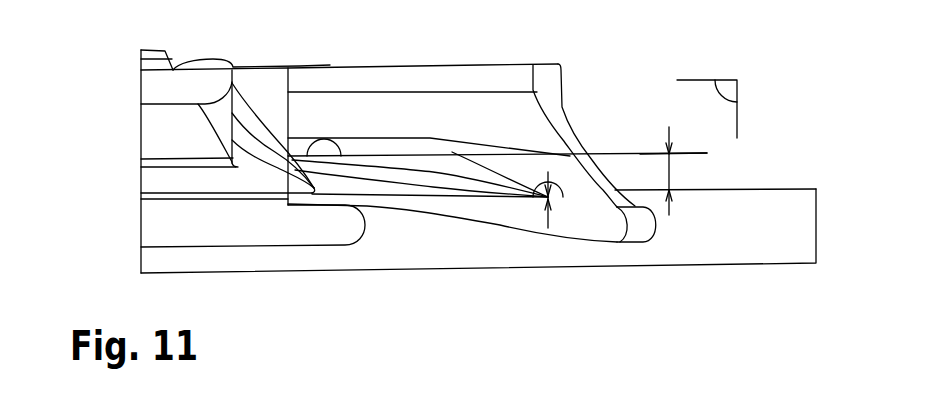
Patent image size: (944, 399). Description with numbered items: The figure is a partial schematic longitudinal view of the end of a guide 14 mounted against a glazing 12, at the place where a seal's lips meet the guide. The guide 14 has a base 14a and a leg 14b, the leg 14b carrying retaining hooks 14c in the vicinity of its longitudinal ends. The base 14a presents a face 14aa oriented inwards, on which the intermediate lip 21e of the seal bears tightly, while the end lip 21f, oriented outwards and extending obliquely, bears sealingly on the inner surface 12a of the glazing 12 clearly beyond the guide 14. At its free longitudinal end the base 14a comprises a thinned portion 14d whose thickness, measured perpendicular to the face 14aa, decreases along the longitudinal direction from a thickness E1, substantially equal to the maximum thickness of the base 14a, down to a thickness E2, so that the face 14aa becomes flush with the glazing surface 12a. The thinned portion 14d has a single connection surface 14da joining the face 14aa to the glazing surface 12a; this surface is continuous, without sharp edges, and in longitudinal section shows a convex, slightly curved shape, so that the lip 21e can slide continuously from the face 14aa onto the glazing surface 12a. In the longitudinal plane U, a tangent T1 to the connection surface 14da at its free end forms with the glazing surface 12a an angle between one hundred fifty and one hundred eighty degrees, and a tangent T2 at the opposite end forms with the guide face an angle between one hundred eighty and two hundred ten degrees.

The guide 14 is at (387, 204).
The base 14a is at (165, 182).
The leg 14b is at (172, 130).
The retaining hook 14c is at (173, 84).
The face oriented inwards 14aa is at (277, 138).
The thinned portion 14d is at (435, 189).
The connection surface 14da is at (428, 166).
The glazing 12 is at (817, 223).
The inner surface of the glazing 12a is at (757, 189).
The intermediate lip 21e is at (633, 243).
The end lip 21f is at (315, 232).
The thickness E1 is at (668, 165).
The thickness E2 is at (525, 220).
The tangent T1 is at (485, 168).
The tangent T2 is at (387, 152).
The longitudinal plane U is at (728, 92).